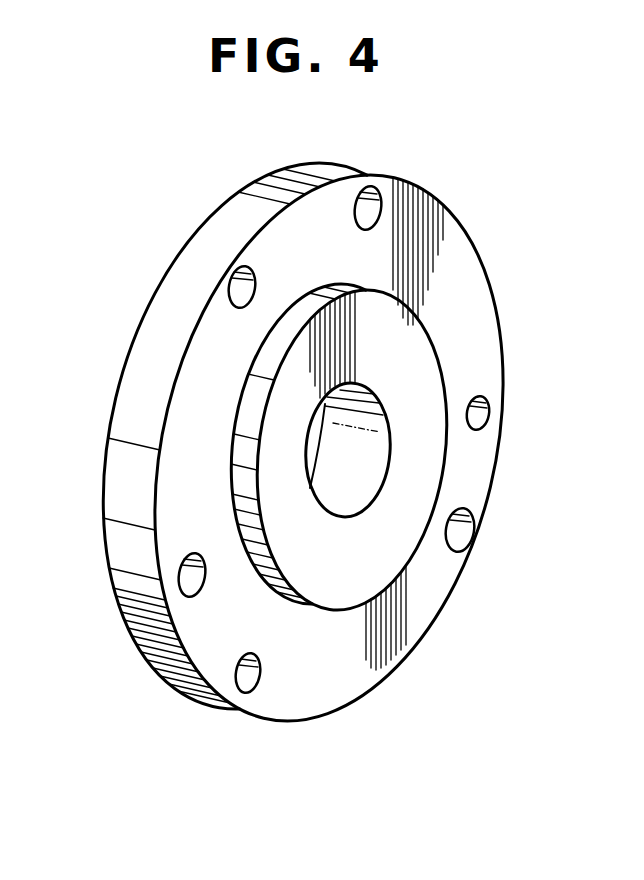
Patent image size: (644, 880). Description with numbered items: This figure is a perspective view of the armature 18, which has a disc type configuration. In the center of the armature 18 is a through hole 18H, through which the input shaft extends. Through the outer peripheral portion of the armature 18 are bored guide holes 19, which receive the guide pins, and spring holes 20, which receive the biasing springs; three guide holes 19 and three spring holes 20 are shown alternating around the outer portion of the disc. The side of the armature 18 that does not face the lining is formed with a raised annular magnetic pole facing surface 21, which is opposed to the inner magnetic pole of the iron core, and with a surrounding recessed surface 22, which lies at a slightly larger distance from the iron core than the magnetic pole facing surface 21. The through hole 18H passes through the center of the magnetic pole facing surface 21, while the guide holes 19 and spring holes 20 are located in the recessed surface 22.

The armature 18 is at (104, 590).
The through hole 18H is at (367, 443).
The guide holes 19 is at (378, 185).
The spring holes 20 is at (237, 285).
The magnetic pole facing surface 21 is at (272, 488).
The recessed surface 22 is at (183, 410).